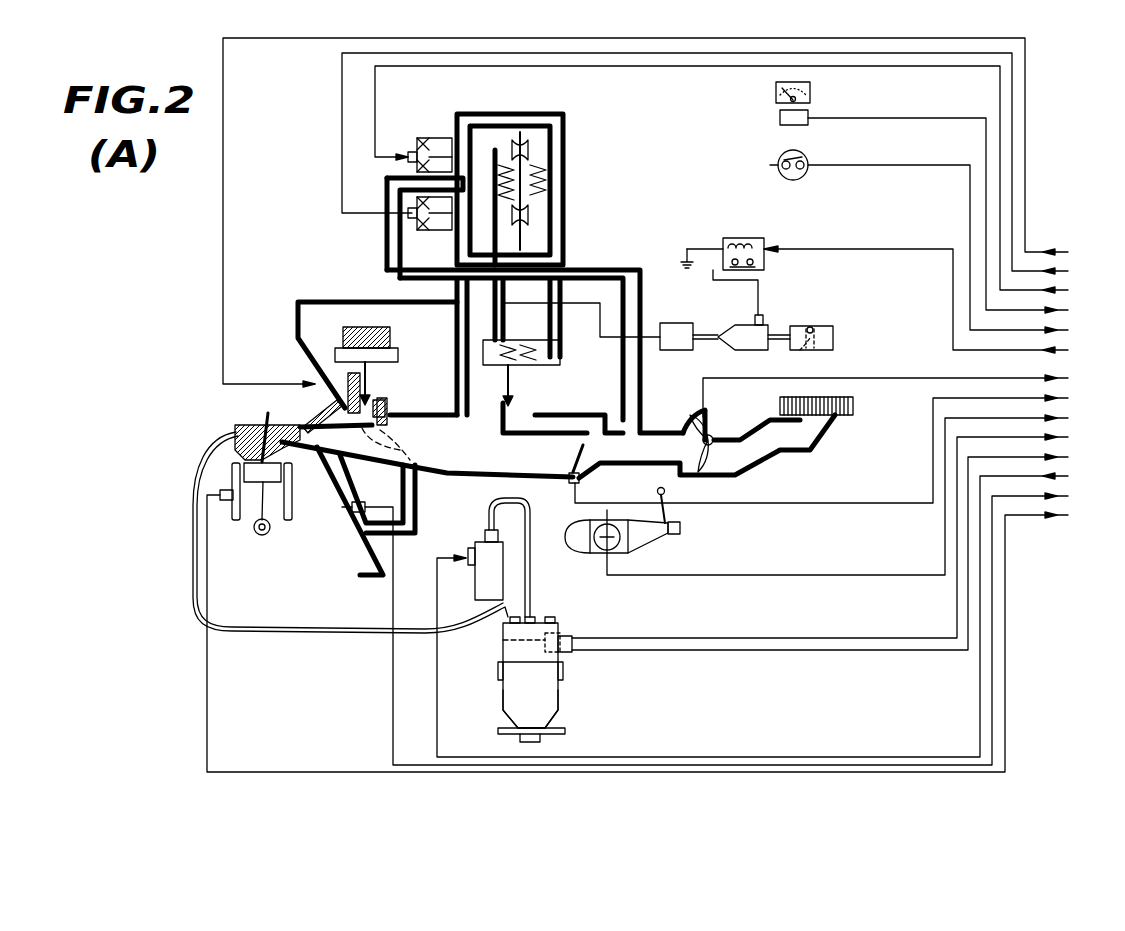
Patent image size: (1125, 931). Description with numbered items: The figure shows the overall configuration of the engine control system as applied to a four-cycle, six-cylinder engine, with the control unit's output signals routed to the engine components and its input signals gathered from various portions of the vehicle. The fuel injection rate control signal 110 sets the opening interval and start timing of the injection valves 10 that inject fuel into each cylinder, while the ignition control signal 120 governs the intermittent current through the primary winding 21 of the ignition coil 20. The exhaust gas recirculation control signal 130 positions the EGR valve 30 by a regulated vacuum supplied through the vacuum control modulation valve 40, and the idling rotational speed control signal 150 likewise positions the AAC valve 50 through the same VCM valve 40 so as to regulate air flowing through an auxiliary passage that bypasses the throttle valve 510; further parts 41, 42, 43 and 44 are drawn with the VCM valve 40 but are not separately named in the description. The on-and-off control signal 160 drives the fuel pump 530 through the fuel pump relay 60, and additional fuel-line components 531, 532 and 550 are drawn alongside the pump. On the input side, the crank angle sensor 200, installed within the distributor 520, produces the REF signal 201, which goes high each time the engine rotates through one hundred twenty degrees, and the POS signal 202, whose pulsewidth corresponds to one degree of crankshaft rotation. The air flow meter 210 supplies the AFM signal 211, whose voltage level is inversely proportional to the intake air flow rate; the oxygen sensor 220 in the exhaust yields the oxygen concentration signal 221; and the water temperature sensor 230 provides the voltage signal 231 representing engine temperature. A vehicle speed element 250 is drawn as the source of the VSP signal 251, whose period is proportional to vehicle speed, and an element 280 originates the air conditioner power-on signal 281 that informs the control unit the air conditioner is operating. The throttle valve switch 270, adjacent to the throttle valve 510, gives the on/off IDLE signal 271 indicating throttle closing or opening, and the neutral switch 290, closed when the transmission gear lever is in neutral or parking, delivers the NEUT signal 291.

The injection valves 10 is at (312, 415).
The ignition coil 20 is at (489, 530).
The primary winding 21 is at (468, 550).
The EGR valve 30 is at (365, 327).
The vacuum control modulation (VCM) valve 40 is at (534, 186).
The EGR control solenoid valve 41 is at (417, 235).
The ISC control solenoid valve 42 is at (432, 138).
The valve body 43 is at (545, 135).
The spring 44 is at (490, 165).
The AAC valve (Auxiliary Air Control Valve) 50 is at (558, 368).
The fuel pump relay 60 is at (741, 238).
The fuel injection rate control signal 110 is at (226, 188).
The ignition control signal (IGN) 120 is at (345, 655).
The exhaust gas recirculation control signal (EGR) 130 is at (310, 80).
The engine idling rotational speed control signal (ISC) 150 is at (377, 84).
The on-and-off control signal (F/P) 160 is at (800, 259).
The crank angle sensor 200 is at (567, 632).
The REF signal 201 is at (651, 638).
The POS signal 202 is at (648, 660).
The air flow meter 210 is at (715, 428).
The intake airflow rate sensor (AFM) signal 211 is at (668, 377).
The oxygen sensor 220 is at (358, 500).
The oxygen concentration signal 221 is at (340, 705).
The water temperature sensor 230 is at (224, 500).
The voltage signal (Tw) 231 is at (206, 590).
The vehicle speed sensor 250 is at (780, 118).
The vehicle speed signal (VSP) 251 is at (843, 119).
The throttle valve switch 270 is at (582, 480).
The on/off (IDLE) signal 271 is at (665, 504).
The air conditioner switch 280 is at (778, 159).
The air conditioner power-on signal (A/C) 281 is at (838, 167).
The neutral switch 290 is at (620, 555).
The neutral switch signal (NEUT) 291 is at (703, 575).
The throttle valve 510 is at (582, 447).
The distributor 520 is at (563, 697).
The fuel pump 530 is at (745, 323).
The fuel filter 531 is at (808, 326).
The fuel filter element 532 is at (803, 350).
The fuel tank 550 is at (688, 322).